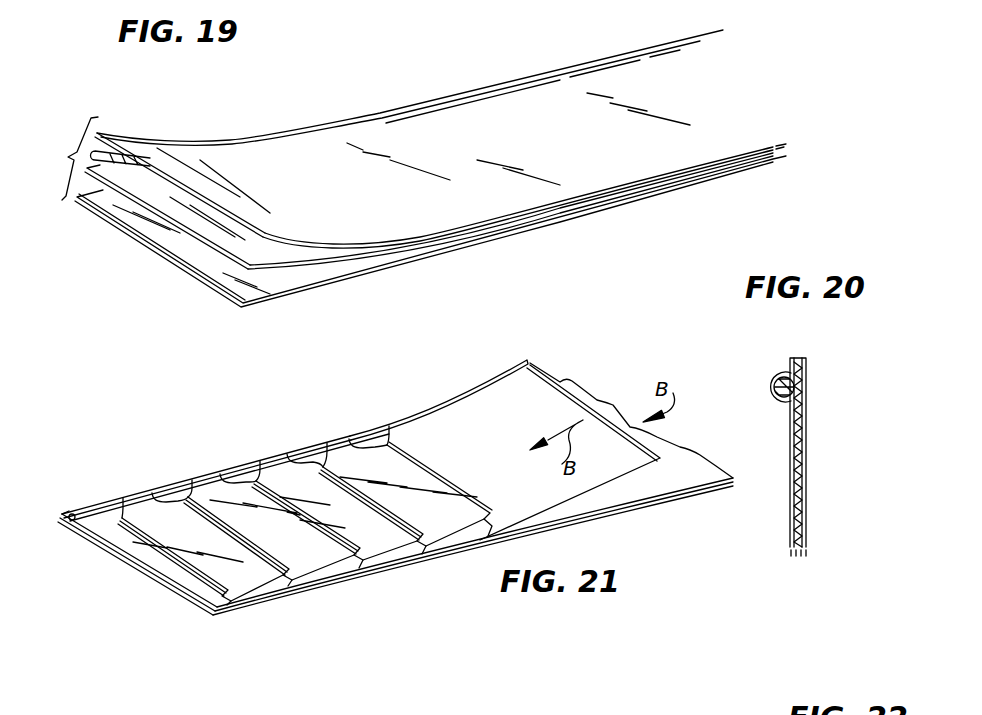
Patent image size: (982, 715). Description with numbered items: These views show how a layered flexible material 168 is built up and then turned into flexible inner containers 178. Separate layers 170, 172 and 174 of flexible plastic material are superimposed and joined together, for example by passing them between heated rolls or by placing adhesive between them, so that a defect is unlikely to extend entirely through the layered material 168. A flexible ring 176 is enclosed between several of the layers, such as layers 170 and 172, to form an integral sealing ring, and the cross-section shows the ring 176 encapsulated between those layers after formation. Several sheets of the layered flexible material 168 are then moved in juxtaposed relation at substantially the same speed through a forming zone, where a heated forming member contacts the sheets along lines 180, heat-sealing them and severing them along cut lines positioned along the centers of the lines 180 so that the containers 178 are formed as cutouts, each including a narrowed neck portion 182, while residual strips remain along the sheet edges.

In FIG. 19, the layered flexible material 168 is at (500, 242).
In FIG. 20, the layered flexible material 168 is at (820, 488).
In FIG. 21, the layered flexible material 168 is at (481, 375).
In FIG. 19, the layer 170 is at (229, 150).
In FIG. 20, the layer 170 is at (777, 372).
In FIG. 21, the layer 170 is at (448, 427).
In FIG. 19, the layer 172 is at (287, 253).
In FIG. 20, the layer 172 is at (797, 357).
In FIG. 19, the layer 174 is at (203, 262).
In FIG. 20, the layer 174 is at (805, 398).
In FIG. 21, the layer 174 is at (578, 390).
In FIG. 19, the ring 176 is at (114, 155).
In FIG. 20, the ring 176 is at (777, 398).
In FIG. 21, the ring 176 is at (68, 528).
In FIG. 21, the flexible inner container 178 is at (160, 561).
In FIG. 21, the lines 180 is at (228, 600).
In FIG. 21, the narrowed neck portion 182 is at (125, 511).